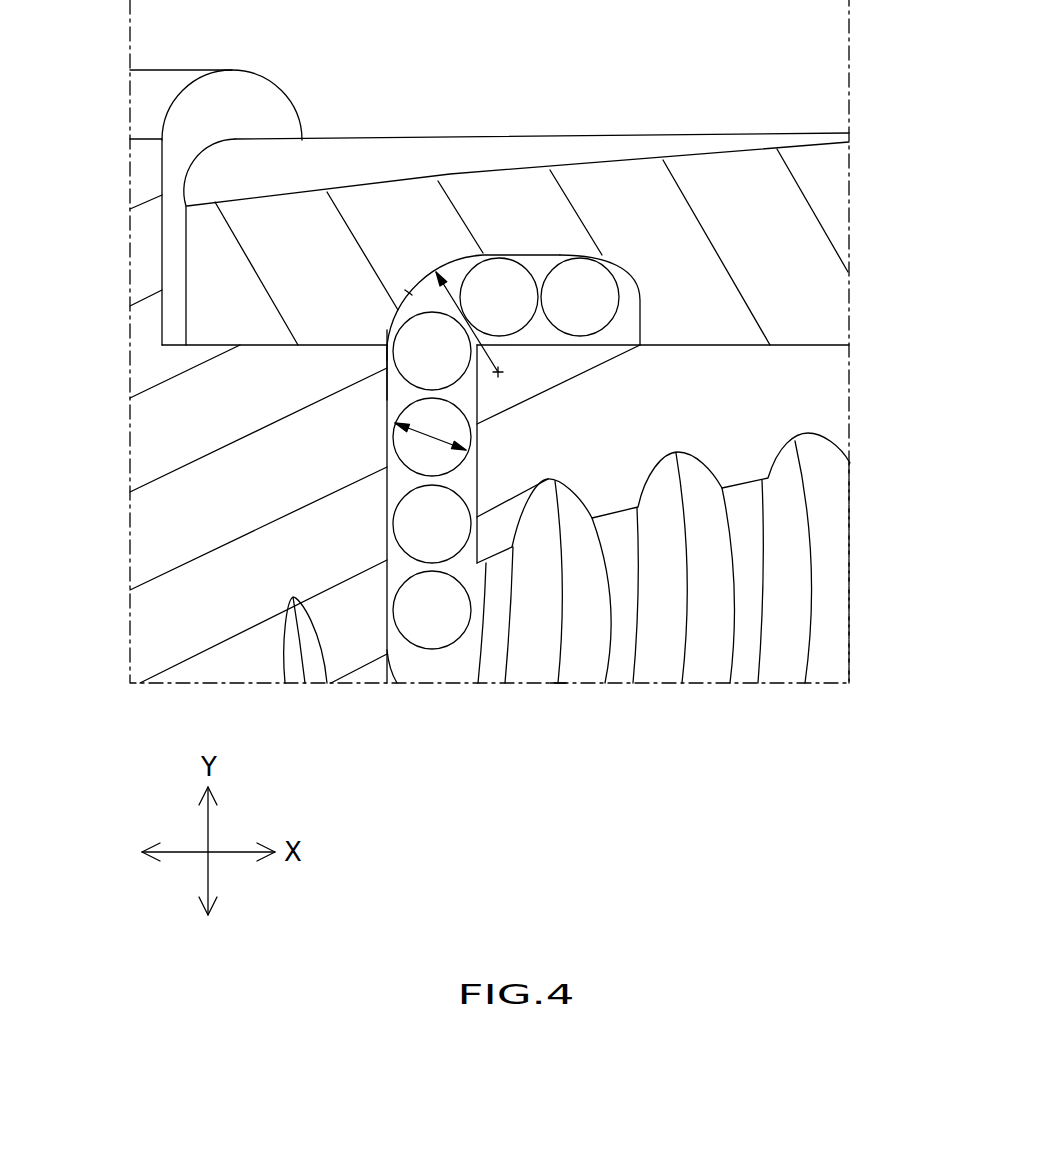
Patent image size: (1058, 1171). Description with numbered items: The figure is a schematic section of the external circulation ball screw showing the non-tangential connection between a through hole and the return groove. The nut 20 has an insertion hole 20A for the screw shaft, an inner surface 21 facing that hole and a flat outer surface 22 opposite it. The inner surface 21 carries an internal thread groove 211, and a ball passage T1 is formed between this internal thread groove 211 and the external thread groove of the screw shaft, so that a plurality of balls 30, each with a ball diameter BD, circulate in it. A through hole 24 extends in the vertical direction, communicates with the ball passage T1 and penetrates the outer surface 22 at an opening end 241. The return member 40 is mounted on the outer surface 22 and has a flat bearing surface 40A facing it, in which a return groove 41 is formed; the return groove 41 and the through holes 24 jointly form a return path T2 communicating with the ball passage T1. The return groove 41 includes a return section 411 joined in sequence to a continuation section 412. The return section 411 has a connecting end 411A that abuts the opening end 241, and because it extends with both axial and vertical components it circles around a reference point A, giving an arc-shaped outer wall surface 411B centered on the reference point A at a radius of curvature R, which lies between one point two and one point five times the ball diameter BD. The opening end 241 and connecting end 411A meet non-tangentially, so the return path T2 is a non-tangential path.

The nut 20 is at (137, 98).
The insertion hole 20A is at (832, 620).
The inner surface 21 is at (664, 602).
The internal thread groove 211 is at (683, 657).
The outer surface 22 is at (175, 345).
The through hole 24 is at (427, 514).
The opening end 241 is at (387, 352).
The ball 30 is at (405, 443).
The return member 40 is at (453, 218).
The bearing surface 40A is at (203, 347).
The return groove 41 is at (456, 195).
The return section 411 is at (416, 222).
The connecting end 411A is at (386, 345).
The outer wall surface 411B is at (398, 310).
The continuation section 412 is at (550, 215).
The reference point A is at (502, 375).
The radius of curvature R is at (447, 290).
The ball diameter BD is at (430, 438).
The ball passage T1 is at (557, 672).
The return path T2 is at (412, 295).